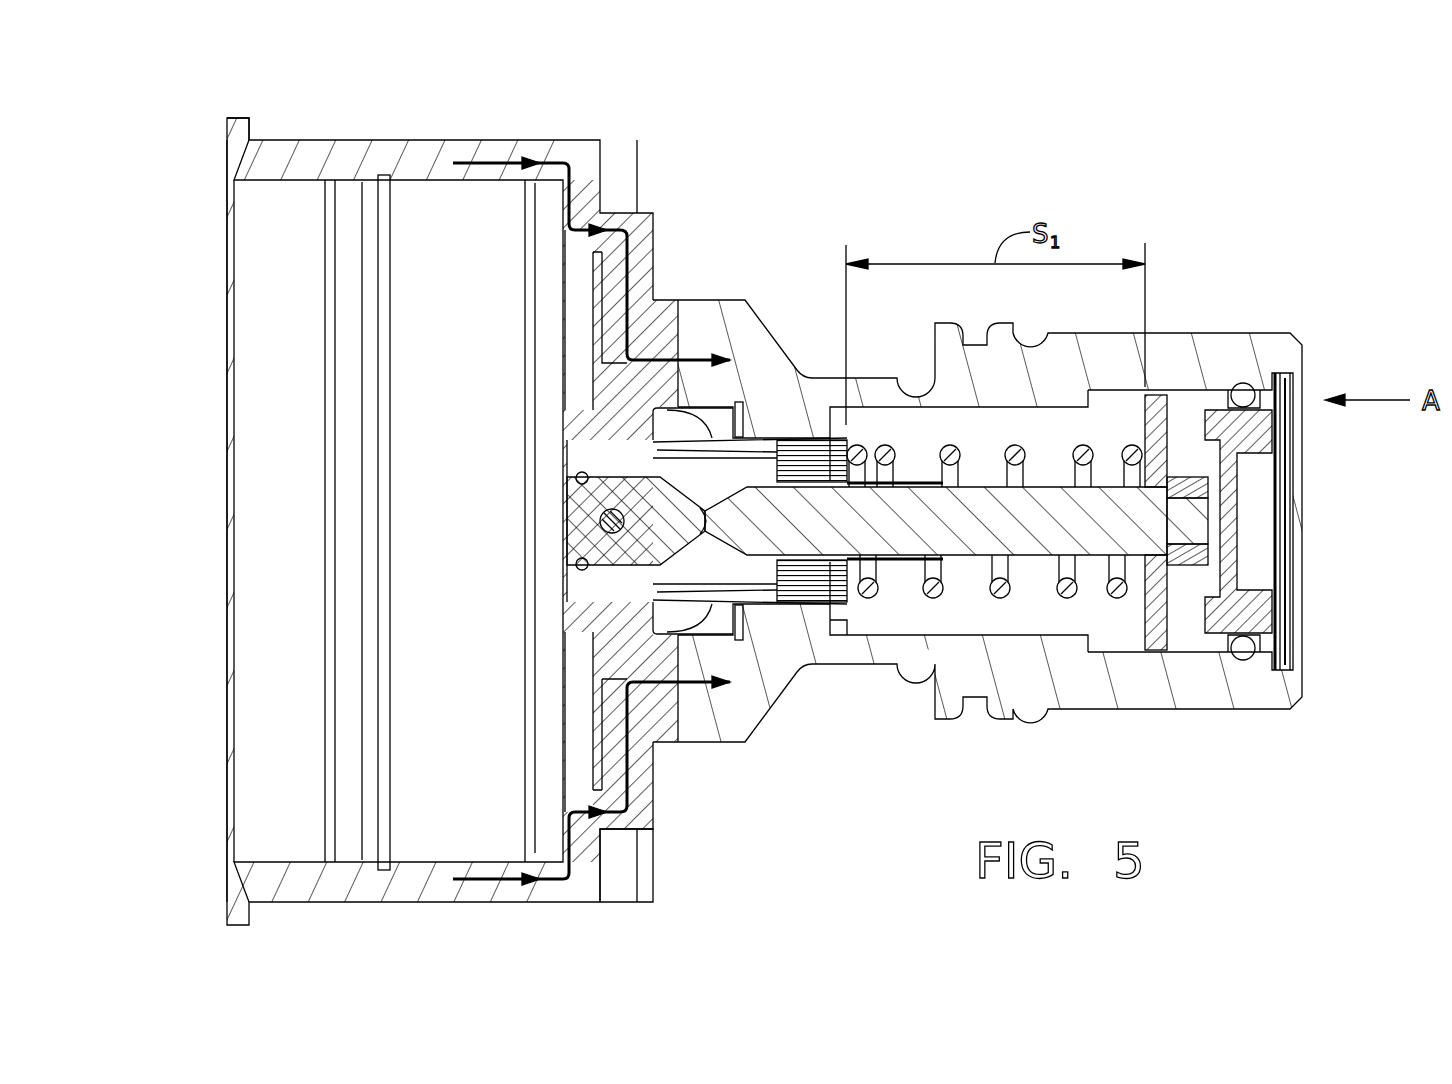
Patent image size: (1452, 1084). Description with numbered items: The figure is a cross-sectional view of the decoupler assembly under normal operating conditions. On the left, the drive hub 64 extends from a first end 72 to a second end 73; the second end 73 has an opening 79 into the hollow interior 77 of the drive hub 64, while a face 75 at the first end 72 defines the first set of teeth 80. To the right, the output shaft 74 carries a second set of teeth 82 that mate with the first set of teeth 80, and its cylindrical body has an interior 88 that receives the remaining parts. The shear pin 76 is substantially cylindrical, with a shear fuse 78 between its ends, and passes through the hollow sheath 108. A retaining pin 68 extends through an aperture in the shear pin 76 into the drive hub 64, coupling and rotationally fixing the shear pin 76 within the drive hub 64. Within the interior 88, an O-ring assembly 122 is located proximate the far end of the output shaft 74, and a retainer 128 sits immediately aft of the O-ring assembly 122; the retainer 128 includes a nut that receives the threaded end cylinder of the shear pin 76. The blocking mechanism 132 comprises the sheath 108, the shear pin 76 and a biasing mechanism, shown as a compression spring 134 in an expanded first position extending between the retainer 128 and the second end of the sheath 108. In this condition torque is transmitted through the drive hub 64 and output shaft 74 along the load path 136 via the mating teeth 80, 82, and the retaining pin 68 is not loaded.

The drive hub 64 is at (429, 160).
The second end 73 is at (237, 117).
The first end 72 is at (653, 867).
The opening 79 is at (230, 328).
The hollow interior 77 is at (472, 339).
The first set of teeth 80 is at (653, 335).
The load path 136 is at (630, 235).
The second set of teeth 82 is at (693, 330).
The output shaft 74 is at (1222, 350).
The interior 88 is at (1012, 437).
The face 75 is at (680, 707).
The sheath 108 is at (787, 593).
The shear pin 76 is at (989, 540).
The retaining pin 68 is at (567, 497).
The shear fuse 78 is at (700, 492).
The compression spring 134 is at (1002, 592).
The blocking mechanism 132 is at (897, 640).
The retainer 128 is at (1158, 632).
The O-ring assembly 122 is at (1290, 608).